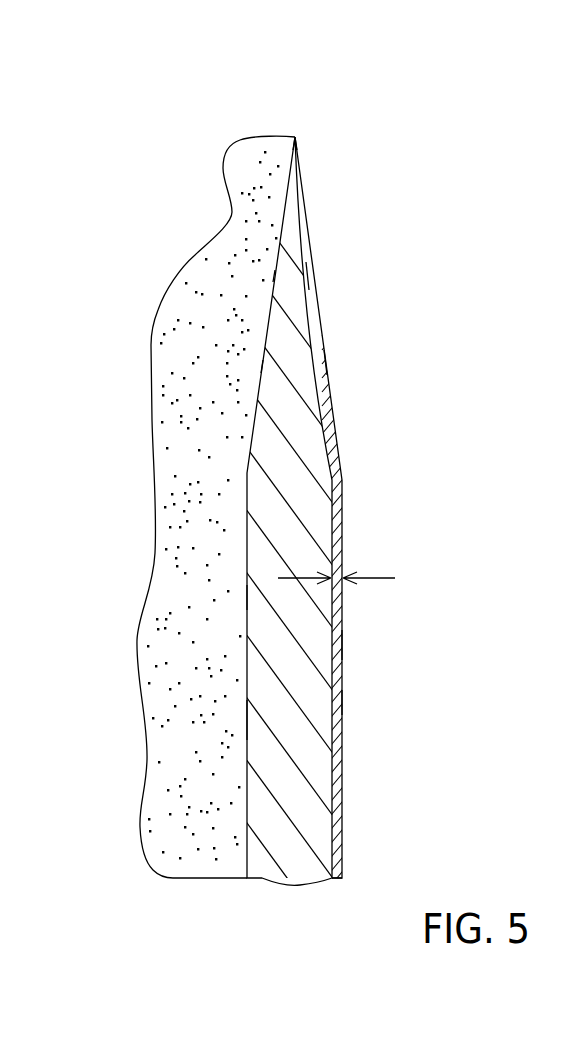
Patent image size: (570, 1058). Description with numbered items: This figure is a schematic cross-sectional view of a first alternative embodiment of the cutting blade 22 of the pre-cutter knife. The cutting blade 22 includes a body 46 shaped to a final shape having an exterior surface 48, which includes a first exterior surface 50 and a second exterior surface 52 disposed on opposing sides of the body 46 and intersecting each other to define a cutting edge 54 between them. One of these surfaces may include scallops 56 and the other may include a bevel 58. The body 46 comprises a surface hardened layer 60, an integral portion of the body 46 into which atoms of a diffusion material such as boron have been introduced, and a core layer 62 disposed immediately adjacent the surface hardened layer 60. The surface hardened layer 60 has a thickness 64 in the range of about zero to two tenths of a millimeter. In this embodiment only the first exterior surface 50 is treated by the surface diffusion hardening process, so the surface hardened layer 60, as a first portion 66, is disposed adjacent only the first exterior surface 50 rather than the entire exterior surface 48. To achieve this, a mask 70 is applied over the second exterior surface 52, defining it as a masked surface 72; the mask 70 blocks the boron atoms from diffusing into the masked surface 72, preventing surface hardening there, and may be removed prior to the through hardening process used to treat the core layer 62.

The cutting blade 22 is at (410, 112).
The body 46 is at (343, 520).
The exterior surface 48 is at (342, 702).
The first exterior surface 50 is at (342, 645).
The second exterior surface 52 is at (242, 597).
The cutting edge 54 is at (297, 134).
The scallops 56 is at (313, 263).
The bevel 58 is at (272, 275).
The surface hardened layer 60 is at (330, 357).
The core layer 62 is at (280, 782).
The thickness 64 is at (385, 578).
The first portion 66 is at (342, 848).
The mask 70 is at (207, 457).
The masked surface 72 is at (262, 367).